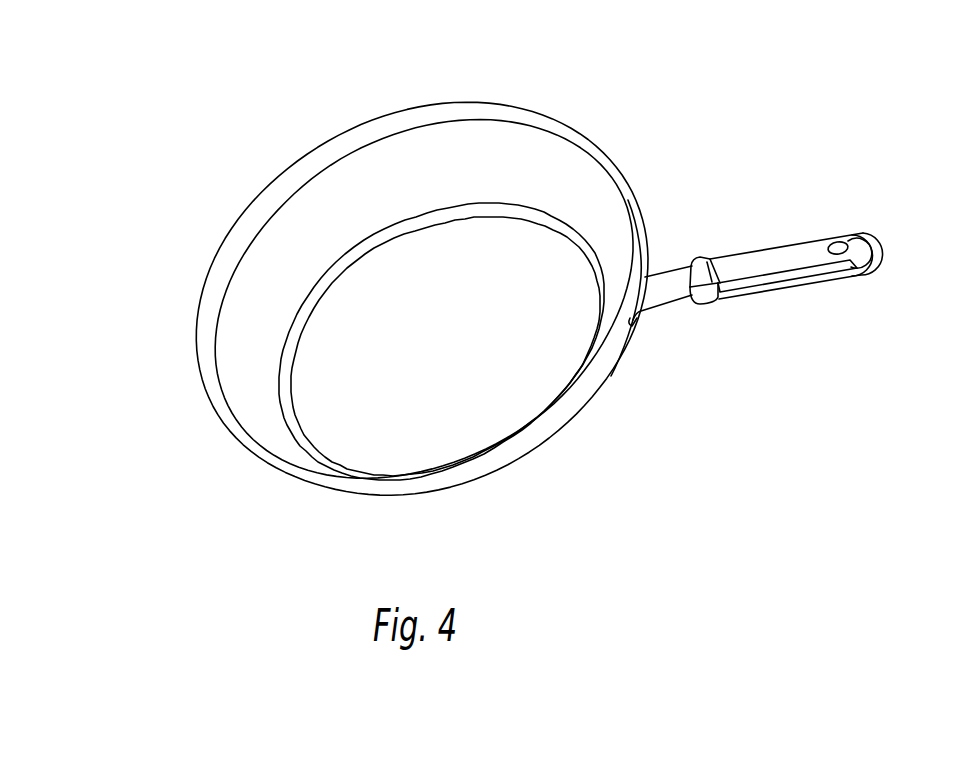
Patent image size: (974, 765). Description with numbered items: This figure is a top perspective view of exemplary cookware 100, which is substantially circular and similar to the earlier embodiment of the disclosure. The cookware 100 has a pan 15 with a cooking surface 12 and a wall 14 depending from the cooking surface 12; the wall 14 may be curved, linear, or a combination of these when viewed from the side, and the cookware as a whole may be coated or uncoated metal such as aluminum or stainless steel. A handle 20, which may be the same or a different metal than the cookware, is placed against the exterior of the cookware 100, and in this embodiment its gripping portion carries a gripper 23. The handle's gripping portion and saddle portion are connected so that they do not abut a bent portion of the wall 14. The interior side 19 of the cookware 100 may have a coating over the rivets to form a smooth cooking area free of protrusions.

The cookware 100 is at (617, 73).
The cooking surface 12 is at (457, 344).
The wall 14 is at (260, 288).
The pan 15 is at (297, 162).
The interior side 19 is at (610, 257).
The handle 20 is at (875, 262).
The gripper 23 is at (782, 288).